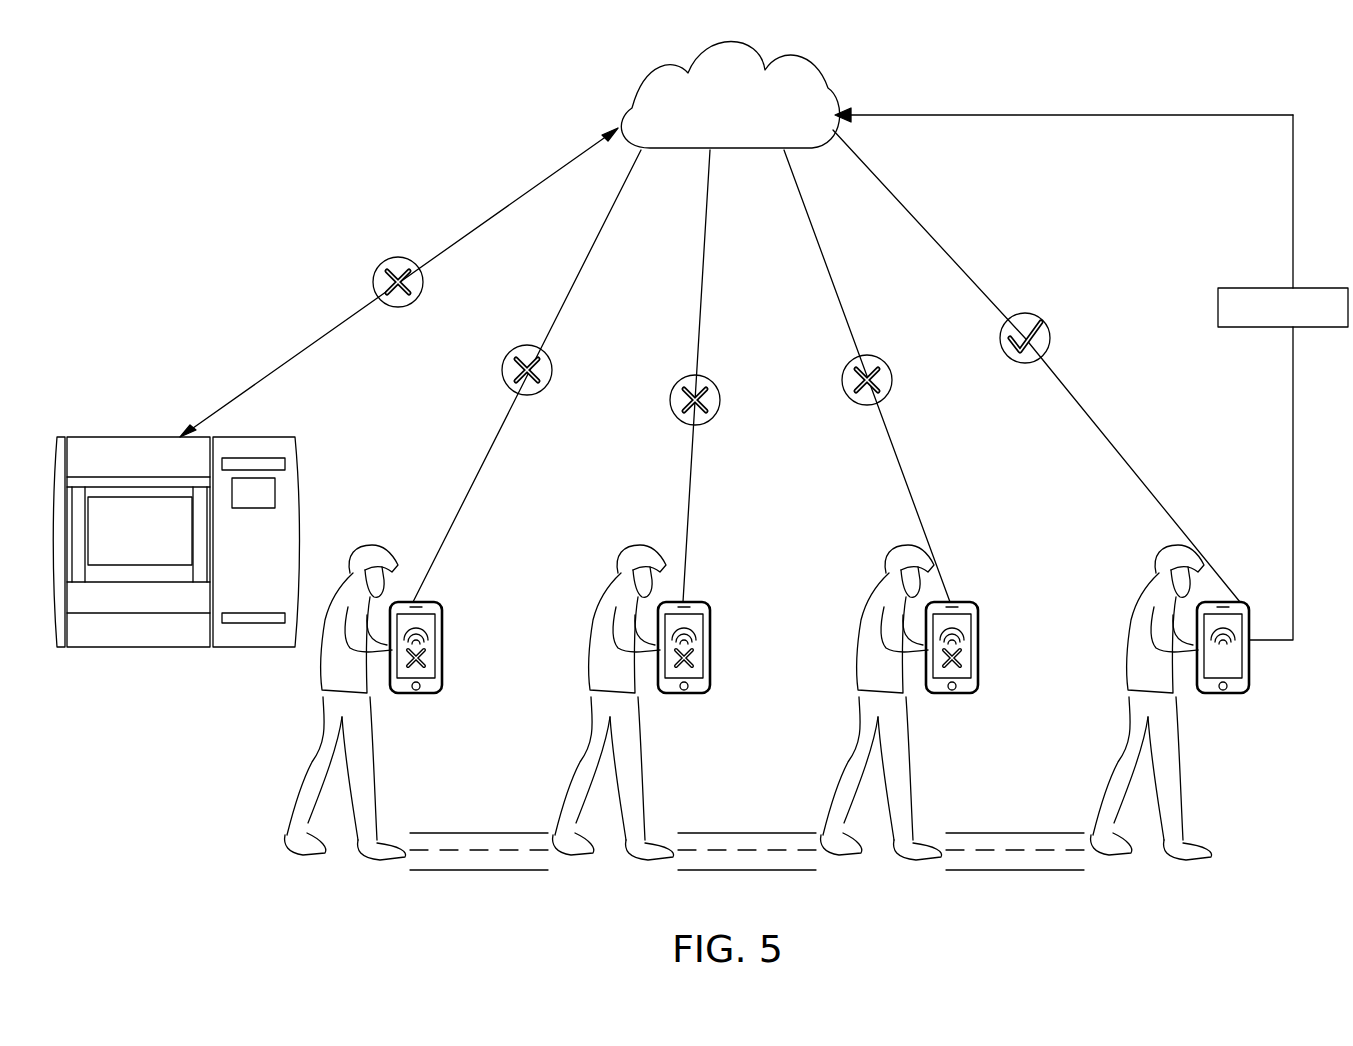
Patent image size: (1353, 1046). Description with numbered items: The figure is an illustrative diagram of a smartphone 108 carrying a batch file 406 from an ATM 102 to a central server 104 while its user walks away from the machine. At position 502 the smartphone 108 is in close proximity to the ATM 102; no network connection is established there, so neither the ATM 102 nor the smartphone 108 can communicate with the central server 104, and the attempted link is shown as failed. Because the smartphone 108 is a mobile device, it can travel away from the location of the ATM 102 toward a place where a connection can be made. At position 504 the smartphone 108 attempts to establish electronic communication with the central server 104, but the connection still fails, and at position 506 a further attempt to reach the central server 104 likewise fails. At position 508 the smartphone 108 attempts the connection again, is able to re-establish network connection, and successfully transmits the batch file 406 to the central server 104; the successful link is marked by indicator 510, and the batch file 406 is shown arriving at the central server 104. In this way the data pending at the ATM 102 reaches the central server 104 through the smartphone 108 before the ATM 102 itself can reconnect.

The ATM 102 is at (161, 436).
The central server 104 is at (831, 100).
The smartphone 108 is at (443, 665).
The batch file 406 is at (1272, 288).
The position 502 is at (342, 863).
The position 504 is at (609, 863).
The position 506 is at (877, 863).
The position 508 is at (1152, 862).
The successful verification indicator 510 is at (1050, 339).